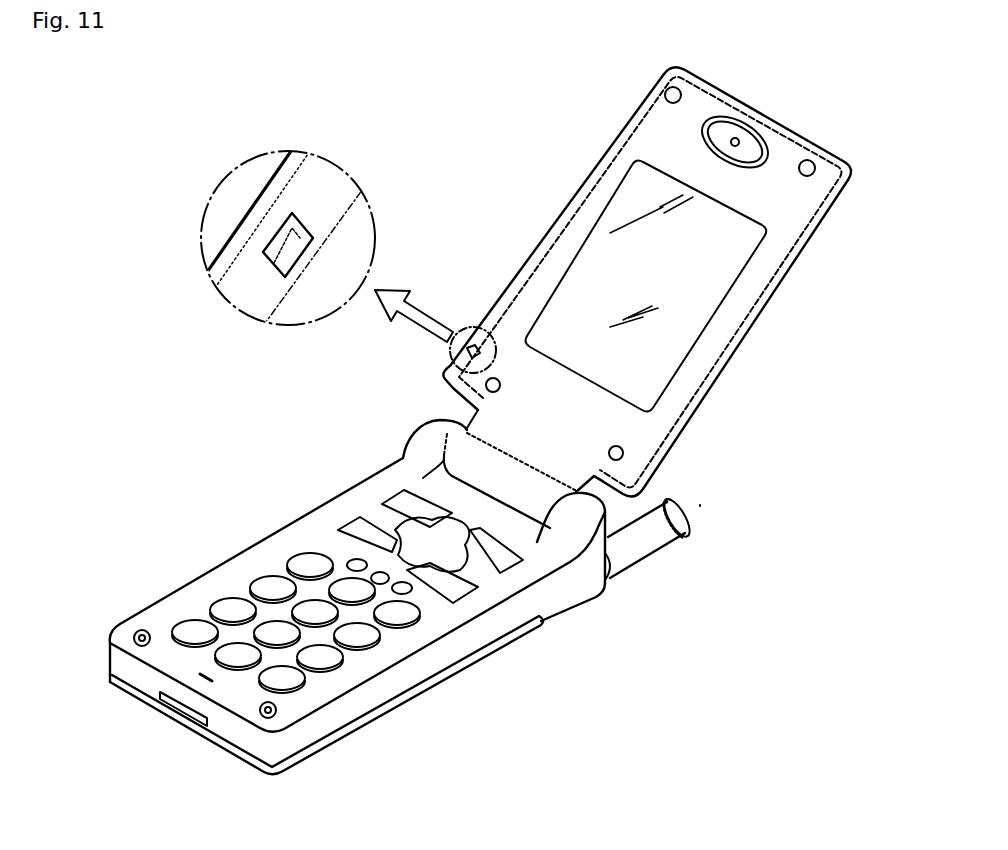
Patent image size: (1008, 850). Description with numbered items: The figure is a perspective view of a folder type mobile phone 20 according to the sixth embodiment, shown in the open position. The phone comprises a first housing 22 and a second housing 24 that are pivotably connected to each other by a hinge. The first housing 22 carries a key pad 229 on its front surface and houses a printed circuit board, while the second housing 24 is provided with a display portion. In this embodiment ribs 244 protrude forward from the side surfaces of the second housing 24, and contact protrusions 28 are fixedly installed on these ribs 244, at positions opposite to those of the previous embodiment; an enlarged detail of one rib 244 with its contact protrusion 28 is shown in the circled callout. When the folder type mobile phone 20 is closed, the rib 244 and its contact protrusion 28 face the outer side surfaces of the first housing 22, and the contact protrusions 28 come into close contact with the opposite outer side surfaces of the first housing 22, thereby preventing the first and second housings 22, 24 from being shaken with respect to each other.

The folder type mobile phone 20 is at (783, 533).
The first housing 22 is at (430, 628).
The second housing 24 is at (733, 350).
The contact protrusion 28 is at (283, 244).
The key pad 229 is at (267, 585).
The rib 244 is at (487, 312).